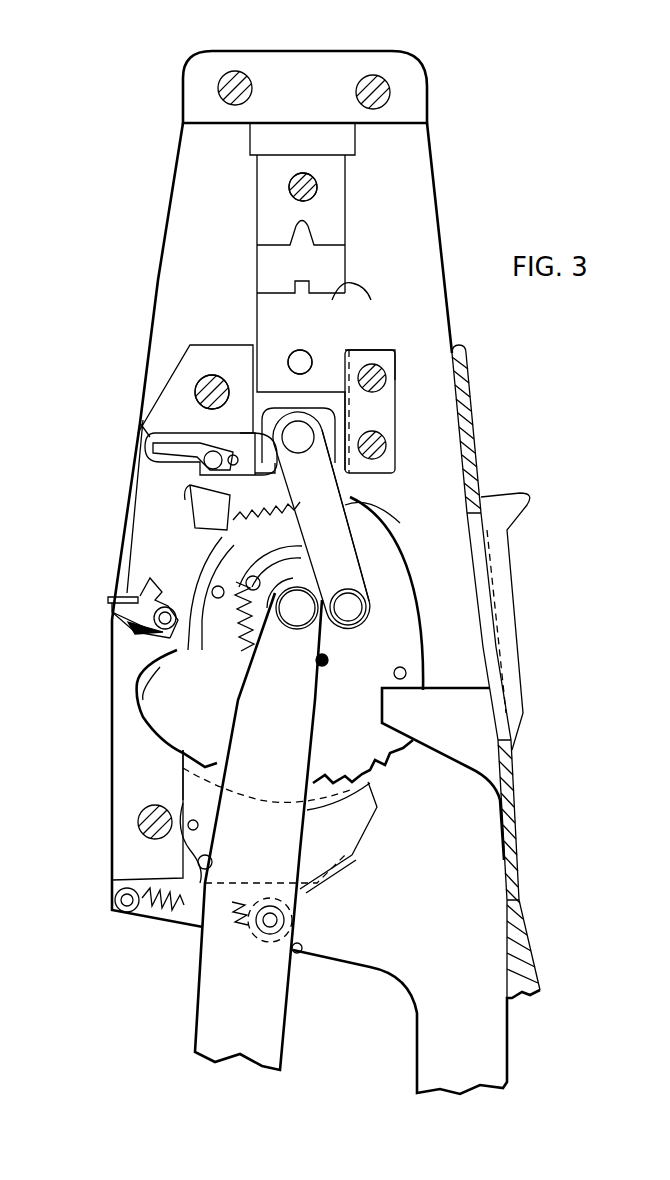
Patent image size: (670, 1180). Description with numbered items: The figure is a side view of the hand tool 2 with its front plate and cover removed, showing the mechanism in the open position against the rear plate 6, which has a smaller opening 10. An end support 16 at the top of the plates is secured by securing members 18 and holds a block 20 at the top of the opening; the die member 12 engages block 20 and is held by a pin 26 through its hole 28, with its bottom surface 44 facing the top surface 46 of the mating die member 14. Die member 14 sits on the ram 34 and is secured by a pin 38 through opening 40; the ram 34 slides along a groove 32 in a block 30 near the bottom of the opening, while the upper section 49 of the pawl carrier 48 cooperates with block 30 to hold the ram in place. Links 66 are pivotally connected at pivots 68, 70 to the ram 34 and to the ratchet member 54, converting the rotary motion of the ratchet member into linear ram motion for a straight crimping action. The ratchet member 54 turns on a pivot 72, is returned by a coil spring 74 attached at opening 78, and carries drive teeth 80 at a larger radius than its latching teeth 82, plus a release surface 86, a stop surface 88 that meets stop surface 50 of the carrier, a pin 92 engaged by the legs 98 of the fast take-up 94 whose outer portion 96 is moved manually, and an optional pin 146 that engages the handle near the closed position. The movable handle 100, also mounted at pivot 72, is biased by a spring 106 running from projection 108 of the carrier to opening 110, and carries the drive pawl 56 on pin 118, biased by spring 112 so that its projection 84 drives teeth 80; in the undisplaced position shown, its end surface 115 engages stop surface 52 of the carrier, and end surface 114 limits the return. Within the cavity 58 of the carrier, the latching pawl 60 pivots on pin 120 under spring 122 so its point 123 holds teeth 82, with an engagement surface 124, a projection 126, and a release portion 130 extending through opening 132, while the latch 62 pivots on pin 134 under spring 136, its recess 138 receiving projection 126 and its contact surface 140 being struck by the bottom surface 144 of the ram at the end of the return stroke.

The hand tool 2 is at (462, 152).
The rear plate 6 is at (162, 256).
The opening 10 is at (347, 262).
The die member 12 is at (352, 220).
The die member 14 is at (352, 322).
The end support 16 is at (322, 78).
The securing members 18 is at (238, 76).
The block 20 is at (345, 150).
The pin 26 is at (295, 197).
The hole 28 is at (290, 182).
The block 30 is at (382, 468).
The groove 32 is at (396, 370).
The ram 34 is at (298, 399).
The pin 38 is at (296, 348).
The opening 40 is at (318, 352).
The bottom surface 44 is at (285, 246).
The top surface 46 is at (350, 290).
The pawl carrier 48 is at (115, 730).
The upper section 49 is at (172, 392).
The stop surface 50 is at (147, 812).
The stop surface 52 is at (185, 807).
The ratchet member 54 is at (408, 603).
The drive pawl 56 is at (348, 830).
The cavity 58 is at (160, 528).
The latching pawl 60 is at (195, 533).
The latch 62 is at (168, 447).
The links 66 is at (338, 493).
The pivot 68 is at (300, 444).
The pivot 70 is at (350, 604).
The pivot 72 is at (305, 615).
The coil spring 74 is at (288, 586).
The opening 78 is at (326, 667).
The drive teeth 80 is at (395, 768).
The latching teeth 82 is at (295, 505).
The projection 84 is at (372, 784).
The release surface 86 is at (391, 523).
The stop surface 88 is at (185, 652).
The pin 92 is at (406, 672).
The fast take-up 94 is at (522, 576).
The portion 96 is at (513, 642).
The legs 98 is at (458, 721).
The movable handle 100 is at (215, 1004).
The spring 106 is at (162, 914).
The projection 108 is at (125, 906).
The opening 110 is at (285, 929).
The spring 112 is at (345, 858).
The end surface 114 is at (199, 824).
The end surface 115 is at (195, 779).
The pin 118 is at (212, 862).
The pin 120 is at (112, 660).
The spring 122 is at (177, 645).
The point 123 is at (110, 592).
The engagement surface 124 is at (266, 568).
The projection 126 is at (202, 509).
The release portion 130 is at (112, 608).
The opening 132 is at (112, 622).
The pin 134 is at (210, 455).
The spring 136 is at (160, 455).
The recess 138 is at (203, 448).
The contact surface 140 is at (247, 458).
The bottom surface 144 is at (252, 420).
The pin 146 is at (220, 598).